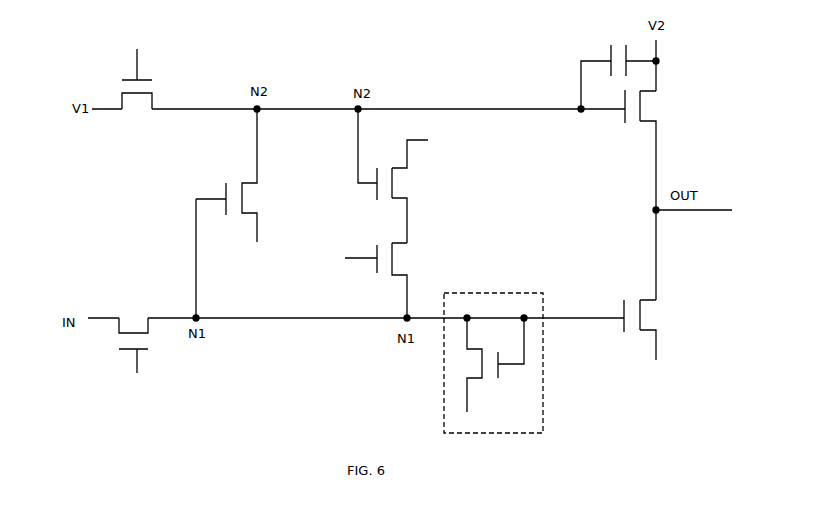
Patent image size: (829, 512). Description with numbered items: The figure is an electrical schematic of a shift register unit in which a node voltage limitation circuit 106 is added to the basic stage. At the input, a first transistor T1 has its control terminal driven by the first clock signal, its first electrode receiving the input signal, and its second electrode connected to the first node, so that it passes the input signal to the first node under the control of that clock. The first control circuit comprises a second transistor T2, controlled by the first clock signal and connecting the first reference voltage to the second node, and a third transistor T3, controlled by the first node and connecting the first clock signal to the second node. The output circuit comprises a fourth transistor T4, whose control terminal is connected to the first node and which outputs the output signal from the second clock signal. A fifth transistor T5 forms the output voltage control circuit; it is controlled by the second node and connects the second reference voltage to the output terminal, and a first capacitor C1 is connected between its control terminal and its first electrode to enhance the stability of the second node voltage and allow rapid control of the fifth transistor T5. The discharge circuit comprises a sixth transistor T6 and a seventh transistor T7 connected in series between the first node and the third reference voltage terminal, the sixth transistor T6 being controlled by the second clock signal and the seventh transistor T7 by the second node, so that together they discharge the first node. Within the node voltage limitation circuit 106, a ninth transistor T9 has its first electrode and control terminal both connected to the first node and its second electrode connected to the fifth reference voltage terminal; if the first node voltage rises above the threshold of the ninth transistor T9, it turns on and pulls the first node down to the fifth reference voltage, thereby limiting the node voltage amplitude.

The node voltage limitation circuit 106 is at (493, 352).
The first transistor T1 is at (134, 349).
The second transistor T2 is at (146, 90).
The third transistor T3 is at (232, 213).
The fourth transistor T4 is at (648, 341).
The fifth transistor T5 is at (627, 195).
The sixth transistor T6 is at (378, 278).
The seventh transistor T7 is at (405, 176).
The ninth transistor T9 is at (494, 372).
The first capacitor C1 is at (618, 72).